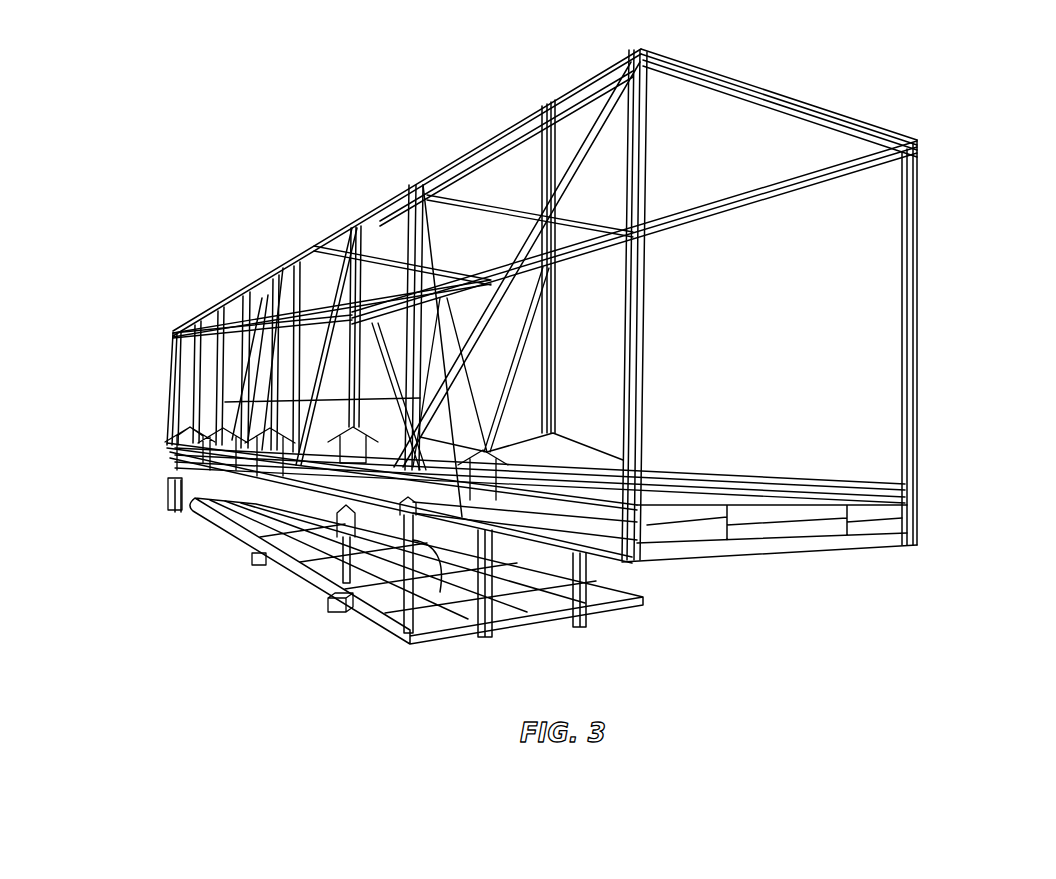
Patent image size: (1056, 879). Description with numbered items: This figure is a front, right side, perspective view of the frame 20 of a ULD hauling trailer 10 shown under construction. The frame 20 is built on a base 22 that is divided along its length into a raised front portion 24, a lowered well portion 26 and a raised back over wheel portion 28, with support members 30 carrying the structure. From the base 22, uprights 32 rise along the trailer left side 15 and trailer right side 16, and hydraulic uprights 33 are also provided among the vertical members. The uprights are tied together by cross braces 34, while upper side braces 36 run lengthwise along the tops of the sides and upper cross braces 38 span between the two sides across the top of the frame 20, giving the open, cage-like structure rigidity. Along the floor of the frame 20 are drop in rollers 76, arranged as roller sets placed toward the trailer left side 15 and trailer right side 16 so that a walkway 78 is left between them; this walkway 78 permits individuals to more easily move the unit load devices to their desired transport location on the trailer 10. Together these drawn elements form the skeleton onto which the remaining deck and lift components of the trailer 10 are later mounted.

The trailer 10 is at (577, 349).
The trailer left side 15 is at (918, 241).
The trailer right side 16 is at (270, 370).
The frame 20 is at (409, 579).
The base 22 is at (533, 535).
The raised front portion 24 is at (579, 600).
The lowered well portion 26 is at (258, 560).
The raised back over wheel portion 28 is at (172, 453).
The support members 30 is at (594, 292).
The uprights 32 is at (635, 389).
The hydraulic uprights 33 is at (183, 499).
The cross braces 34 is at (567, 168).
The upper side braces 36 is at (450, 163).
The upper cross braces 38 is at (604, 220).
The drop in rollers 76 is at (543, 465).
The walkway 78 is at (680, 486).